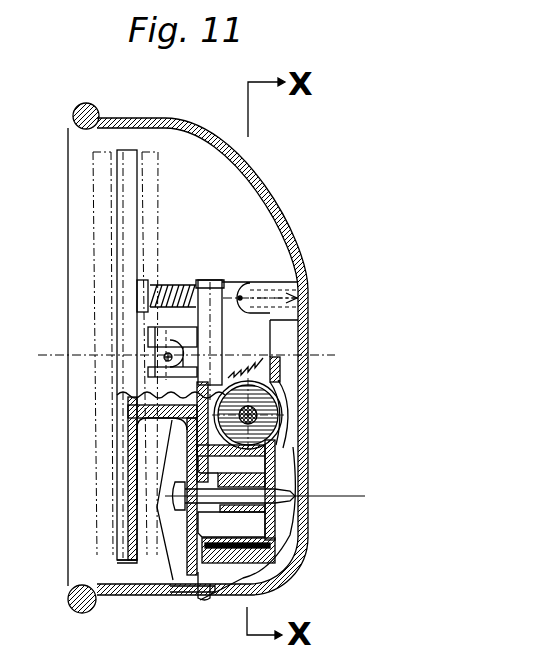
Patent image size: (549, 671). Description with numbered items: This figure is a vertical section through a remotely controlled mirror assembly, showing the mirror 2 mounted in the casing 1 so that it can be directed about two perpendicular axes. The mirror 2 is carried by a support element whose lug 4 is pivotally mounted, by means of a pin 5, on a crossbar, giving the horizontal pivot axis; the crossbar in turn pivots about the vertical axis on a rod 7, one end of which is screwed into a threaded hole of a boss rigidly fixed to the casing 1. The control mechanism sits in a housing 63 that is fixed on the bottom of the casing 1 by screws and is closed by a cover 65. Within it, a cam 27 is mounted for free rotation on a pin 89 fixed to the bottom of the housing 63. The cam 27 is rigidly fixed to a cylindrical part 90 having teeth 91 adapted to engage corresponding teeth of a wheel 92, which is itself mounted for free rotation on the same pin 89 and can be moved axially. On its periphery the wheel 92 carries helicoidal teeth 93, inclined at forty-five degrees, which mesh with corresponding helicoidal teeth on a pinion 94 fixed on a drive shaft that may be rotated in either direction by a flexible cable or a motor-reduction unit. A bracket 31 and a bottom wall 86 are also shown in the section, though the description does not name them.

The casing 1 is at (88, 104).
The mirror 2 is at (120, 213).
The lug 4 is at (140, 362).
The pin 5 is at (150, 362).
The rod 7 is at (172, 321).
The cam 27 is at (208, 584).
The support bracket 31 is at (135, 435).
The housing 63 is at (290, 365).
The cover 65 is at (208, 280).
The bottom wall 86 is at (153, 588).
The pin 89 is at (235, 490).
The cylindrical part 90 is at (177, 550).
The teeth 91 is at (200, 473).
The wheel 92 is at (210, 538).
The helicoidal teeth 93 is at (280, 578).
The pinion 94 is at (285, 409).